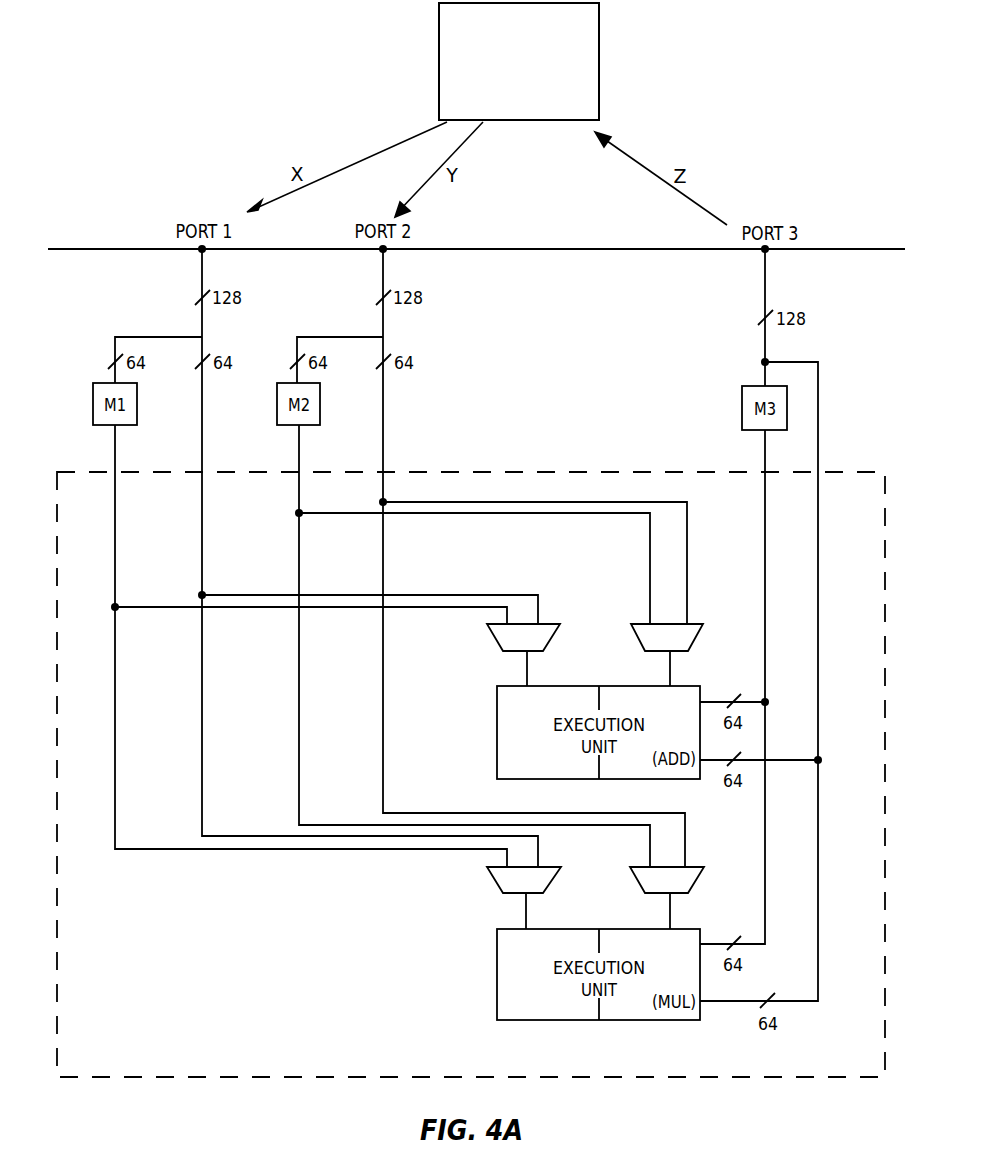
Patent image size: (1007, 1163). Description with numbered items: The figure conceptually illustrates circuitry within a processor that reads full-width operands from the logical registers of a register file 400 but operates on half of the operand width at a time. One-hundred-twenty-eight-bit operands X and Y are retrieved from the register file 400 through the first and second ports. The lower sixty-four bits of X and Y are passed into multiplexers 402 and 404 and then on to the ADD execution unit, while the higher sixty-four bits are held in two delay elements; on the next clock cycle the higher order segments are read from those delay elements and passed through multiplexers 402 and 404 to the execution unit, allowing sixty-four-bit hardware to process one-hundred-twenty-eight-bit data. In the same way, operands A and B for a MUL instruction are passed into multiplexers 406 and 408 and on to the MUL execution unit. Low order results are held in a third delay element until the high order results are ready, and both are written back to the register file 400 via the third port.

The register file 400 is at (537, 108).
The multiplexer 402 is at (492, 631).
The multiplexer 404 is at (700, 637).
The multiplexer 406 is at (490, 875).
The multiplexer 408 is at (700, 882).